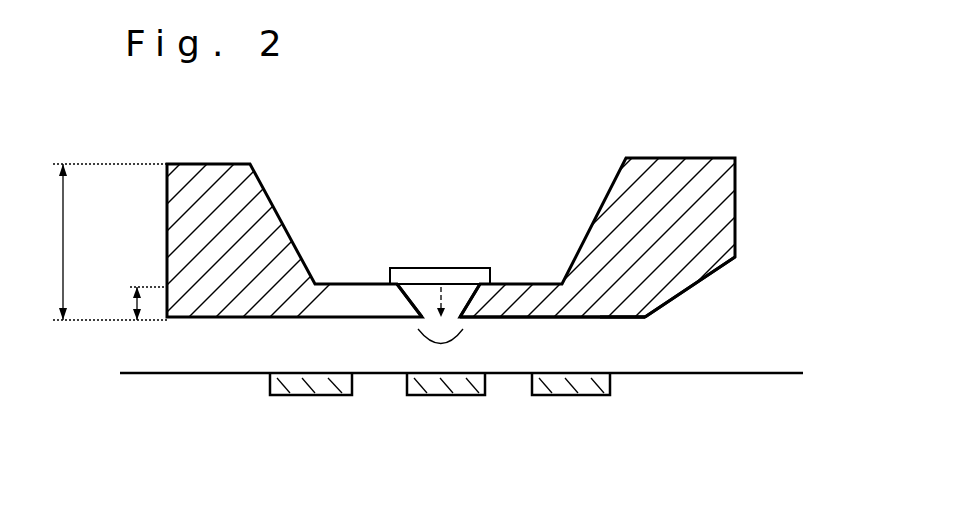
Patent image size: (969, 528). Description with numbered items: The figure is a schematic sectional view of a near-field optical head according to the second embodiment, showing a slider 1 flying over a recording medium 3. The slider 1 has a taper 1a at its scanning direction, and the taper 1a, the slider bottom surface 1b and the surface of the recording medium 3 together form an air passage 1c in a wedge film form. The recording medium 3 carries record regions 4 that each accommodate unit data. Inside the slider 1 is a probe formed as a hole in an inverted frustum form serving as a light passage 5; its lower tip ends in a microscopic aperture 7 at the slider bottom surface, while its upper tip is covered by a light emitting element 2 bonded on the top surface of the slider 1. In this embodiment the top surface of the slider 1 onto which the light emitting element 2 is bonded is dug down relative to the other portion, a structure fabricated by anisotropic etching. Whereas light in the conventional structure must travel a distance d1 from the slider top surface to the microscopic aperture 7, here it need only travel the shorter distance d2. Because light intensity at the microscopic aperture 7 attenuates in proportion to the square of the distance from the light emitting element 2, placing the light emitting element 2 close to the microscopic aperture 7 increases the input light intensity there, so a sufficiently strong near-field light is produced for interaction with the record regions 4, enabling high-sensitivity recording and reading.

The slider 1 is at (715, 158).
The taper 1a is at (700, 280).
The slider bottom surface 1b is at (593, 317).
The air passage 1c is at (673, 343).
The light emitting element 2 is at (443, 282).
The recording medium 3 is at (461, 391).
The record region 4 is at (590, 392).
The light passage 5 is at (458, 295).
The microscopic aperture 7 is at (434, 319).
The distance d1 is at (99, 242).
The distance d2 is at (133, 305).